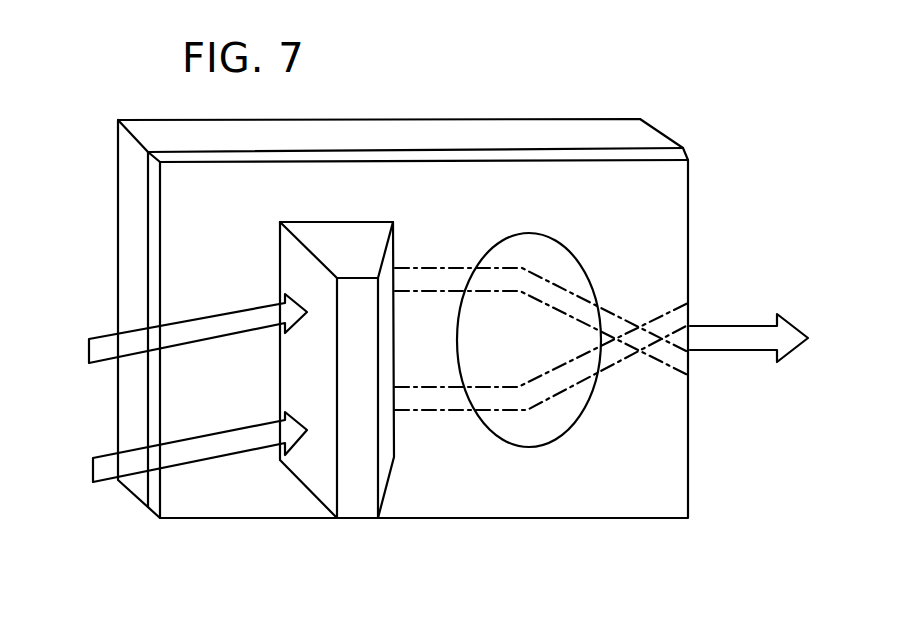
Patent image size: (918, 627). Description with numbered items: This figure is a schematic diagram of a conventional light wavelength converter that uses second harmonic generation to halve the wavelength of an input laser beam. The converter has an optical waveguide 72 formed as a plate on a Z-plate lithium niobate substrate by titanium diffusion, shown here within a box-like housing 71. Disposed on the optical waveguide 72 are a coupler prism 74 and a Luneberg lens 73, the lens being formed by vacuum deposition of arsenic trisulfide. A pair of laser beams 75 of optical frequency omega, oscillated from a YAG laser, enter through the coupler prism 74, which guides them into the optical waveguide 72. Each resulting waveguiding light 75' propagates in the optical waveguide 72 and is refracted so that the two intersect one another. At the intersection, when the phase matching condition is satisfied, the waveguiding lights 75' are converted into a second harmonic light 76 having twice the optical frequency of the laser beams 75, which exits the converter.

The housing 71 is at (640, 133).
The optical waveguide 72 is at (683, 152).
The Luneberg lens 73 is at (552, 260).
The coupler prism 74 is at (360, 503).
The laser beams 75 is at (183, 409).
The waveguiding light 75' is at (541, 347).
The second harmonic light 76 is at (738, 332).